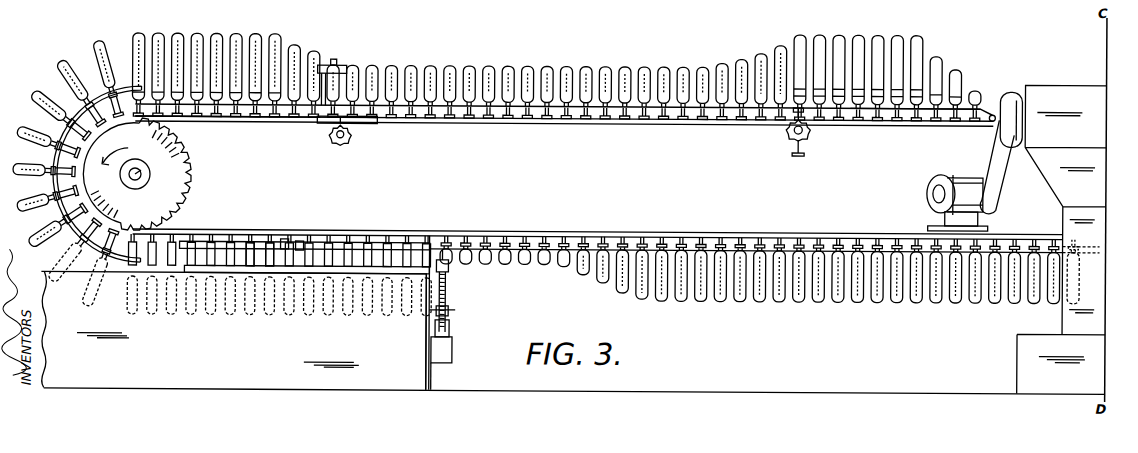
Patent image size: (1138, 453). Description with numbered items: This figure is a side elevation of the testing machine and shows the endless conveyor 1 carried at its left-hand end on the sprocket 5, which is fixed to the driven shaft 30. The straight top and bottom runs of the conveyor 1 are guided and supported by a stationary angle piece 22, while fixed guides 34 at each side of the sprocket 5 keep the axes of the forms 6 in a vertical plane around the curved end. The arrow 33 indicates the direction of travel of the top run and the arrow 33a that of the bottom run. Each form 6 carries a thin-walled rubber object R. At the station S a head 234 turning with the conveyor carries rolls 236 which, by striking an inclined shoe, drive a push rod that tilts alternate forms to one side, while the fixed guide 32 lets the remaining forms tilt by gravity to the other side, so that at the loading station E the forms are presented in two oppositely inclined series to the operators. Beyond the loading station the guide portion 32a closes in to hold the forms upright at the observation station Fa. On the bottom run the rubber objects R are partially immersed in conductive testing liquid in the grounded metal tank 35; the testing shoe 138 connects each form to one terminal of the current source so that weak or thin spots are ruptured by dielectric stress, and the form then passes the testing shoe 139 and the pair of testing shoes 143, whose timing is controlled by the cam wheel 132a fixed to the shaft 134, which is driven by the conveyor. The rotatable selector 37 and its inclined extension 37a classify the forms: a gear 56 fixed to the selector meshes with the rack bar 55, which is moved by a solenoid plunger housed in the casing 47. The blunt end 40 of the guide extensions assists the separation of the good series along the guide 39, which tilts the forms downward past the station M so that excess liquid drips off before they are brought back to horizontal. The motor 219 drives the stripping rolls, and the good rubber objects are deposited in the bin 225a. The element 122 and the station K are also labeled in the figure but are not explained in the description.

The conveyor 1 is at (108, 227).
The sprocket 5 is at (185, 181).
The form 6 is at (57, 118).
The angle piece 22 is at (524, 122).
The driven shaft 30 is at (141, 174).
The fixed guide 32 is at (893, 106).
The guide portion 32a is at (291, 122).
The arrow 33 is at (564, 49).
The arrow 33a is at (815, 319).
The fixed guides 34 is at (138, 86).
The tank 35 is at (273, 353).
The selector 37 is at (403, 273).
The inclined extension 37a is at (300, 240).
The guide 39 is at (612, 246).
The blunt end 40 is at (337, 243).
The casing 47 is at (463, 343).
The rack bar 55 is at (447, 291).
The gear 56 is at (450, 264).
The hold-down device 122 is at (338, 64).
The cam wheel 132a is at (356, 133).
The shaft 134 is at (333, 138).
The testing shoe 138 is at (247, 243).
The testing shoe 139 is at (268, 243).
The testing shoes 143 is at (285, 238).
The motor 219 is at (950, 175).
The bin 225a is at (1066, 86).
The head 234 is at (788, 127).
The rolls 236 is at (792, 151).
The station S is at (816, 131).
The rubber object R is at (236, 36).
The loading station E is at (601, 51).
The station K is at (448, 223).
The station M is at (670, 297).
The observation station Fa is at (200, 25).